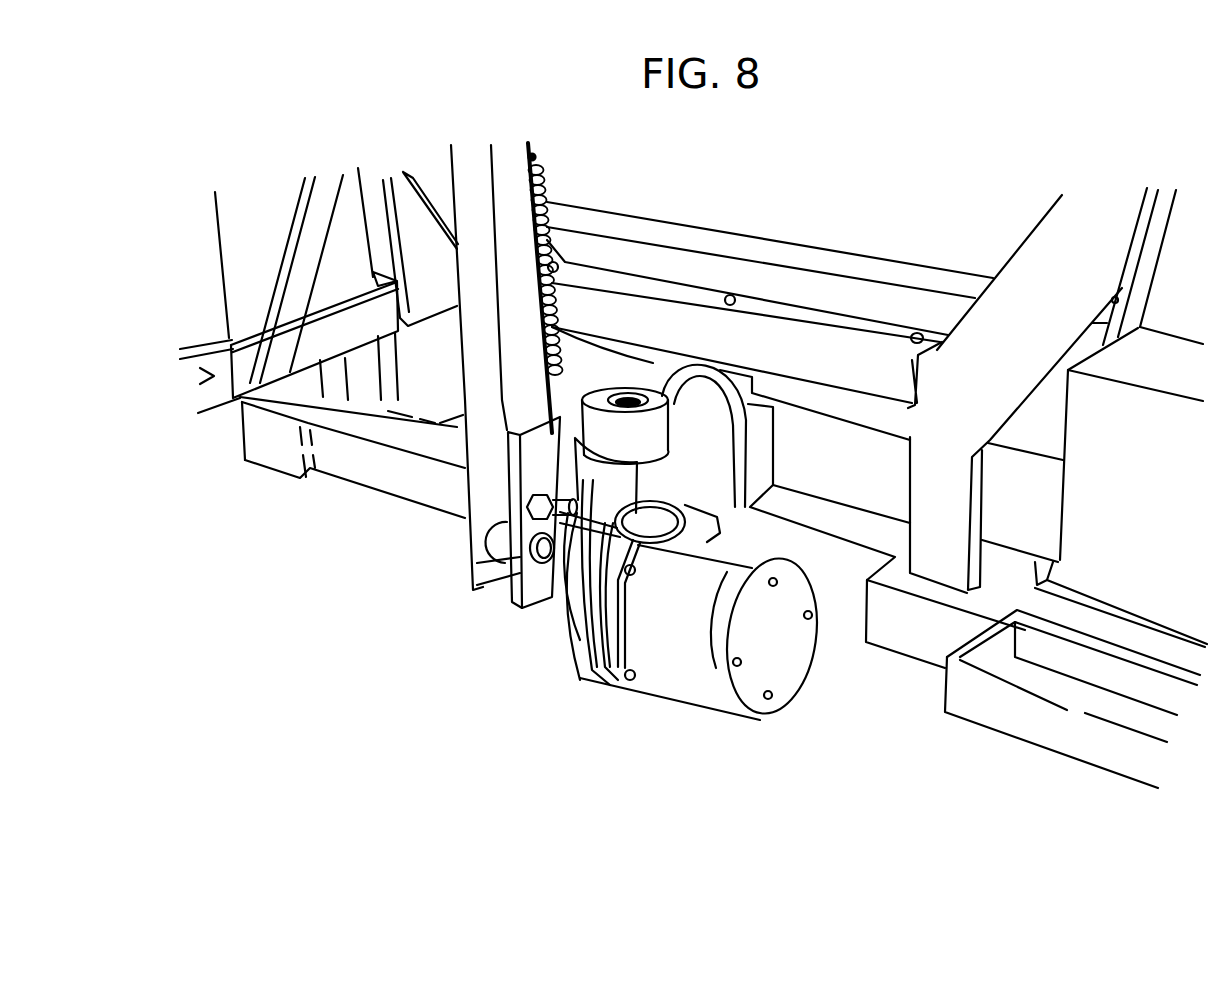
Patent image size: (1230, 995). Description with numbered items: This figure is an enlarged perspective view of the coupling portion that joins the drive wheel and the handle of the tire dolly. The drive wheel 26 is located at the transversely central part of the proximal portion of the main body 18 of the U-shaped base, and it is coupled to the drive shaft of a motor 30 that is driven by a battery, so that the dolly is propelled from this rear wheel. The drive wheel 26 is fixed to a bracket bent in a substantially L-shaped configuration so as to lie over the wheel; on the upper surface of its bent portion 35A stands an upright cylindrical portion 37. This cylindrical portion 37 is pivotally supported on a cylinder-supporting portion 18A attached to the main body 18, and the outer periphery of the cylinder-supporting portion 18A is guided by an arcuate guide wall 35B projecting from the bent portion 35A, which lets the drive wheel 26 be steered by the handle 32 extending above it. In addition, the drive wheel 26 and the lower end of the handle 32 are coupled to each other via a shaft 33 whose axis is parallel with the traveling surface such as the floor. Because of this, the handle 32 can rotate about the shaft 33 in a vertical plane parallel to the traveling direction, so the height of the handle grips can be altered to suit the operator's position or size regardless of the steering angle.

The main body 18 is at (365, 467).
The cylinder-supporting portion 18A is at (588, 425).
The drive wheel 26 is at (583, 667).
The motor 30 is at (693, 677).
The handle 32 is at (513, 173).
The shaft 33 is at (498, 548).
The bent portion 35A is at (552, 600).
The arcuate guide wall 35B is at (565, 580).
The cylindrical portion 37 is at (627, 393).